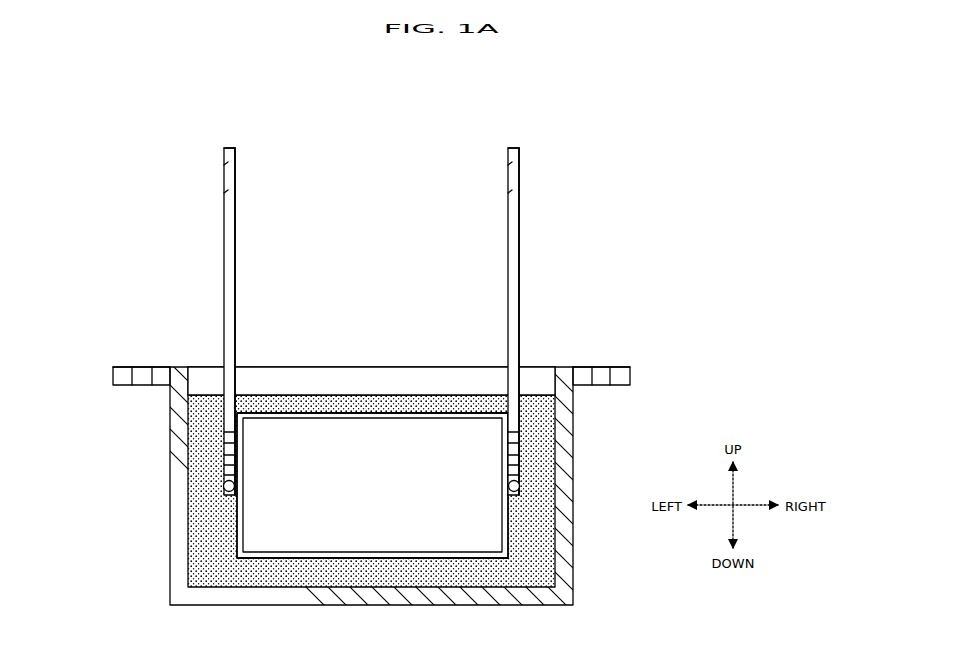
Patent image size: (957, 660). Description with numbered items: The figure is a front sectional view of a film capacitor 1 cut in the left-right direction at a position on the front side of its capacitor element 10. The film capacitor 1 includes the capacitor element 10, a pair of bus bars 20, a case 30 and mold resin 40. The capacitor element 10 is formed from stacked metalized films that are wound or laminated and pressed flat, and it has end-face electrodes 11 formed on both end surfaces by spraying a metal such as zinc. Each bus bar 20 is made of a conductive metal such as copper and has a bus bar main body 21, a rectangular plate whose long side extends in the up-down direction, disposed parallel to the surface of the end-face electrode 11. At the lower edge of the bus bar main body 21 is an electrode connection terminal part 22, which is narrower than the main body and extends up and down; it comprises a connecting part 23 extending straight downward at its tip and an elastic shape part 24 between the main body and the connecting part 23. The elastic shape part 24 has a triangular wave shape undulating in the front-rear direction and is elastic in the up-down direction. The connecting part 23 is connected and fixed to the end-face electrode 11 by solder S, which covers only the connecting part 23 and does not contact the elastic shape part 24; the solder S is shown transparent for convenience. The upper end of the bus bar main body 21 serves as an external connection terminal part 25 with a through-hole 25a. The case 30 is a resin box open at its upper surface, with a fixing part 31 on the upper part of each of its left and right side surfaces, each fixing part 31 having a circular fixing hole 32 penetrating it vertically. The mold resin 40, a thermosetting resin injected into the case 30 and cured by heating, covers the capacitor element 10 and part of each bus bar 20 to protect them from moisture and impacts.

The film capacitor 1 is at (138, 205).
The capacitor element 10 is at (400, 412).
The end-face electrode 11 is at (228, 542).
The bus bar 20 is at (223, 300).
The bus bar main body 21 is at (236, 268).
The electrode connection terminal part 22 is at (132, 398).
The connecting part 23 is at (224, 484).
The elastic shape part 24 is at (226, 455).
The external connection terminal part 25 is at (237, 151).
The through-hole 25a is at (225, 177).
The case 30 is at (206, 367).
The fixing part 31 is at (113, 367).
The fixing hole 32 is at (140, 366).
The mold resin 40 is at (322, 396).
The solder S is at (228, 500).